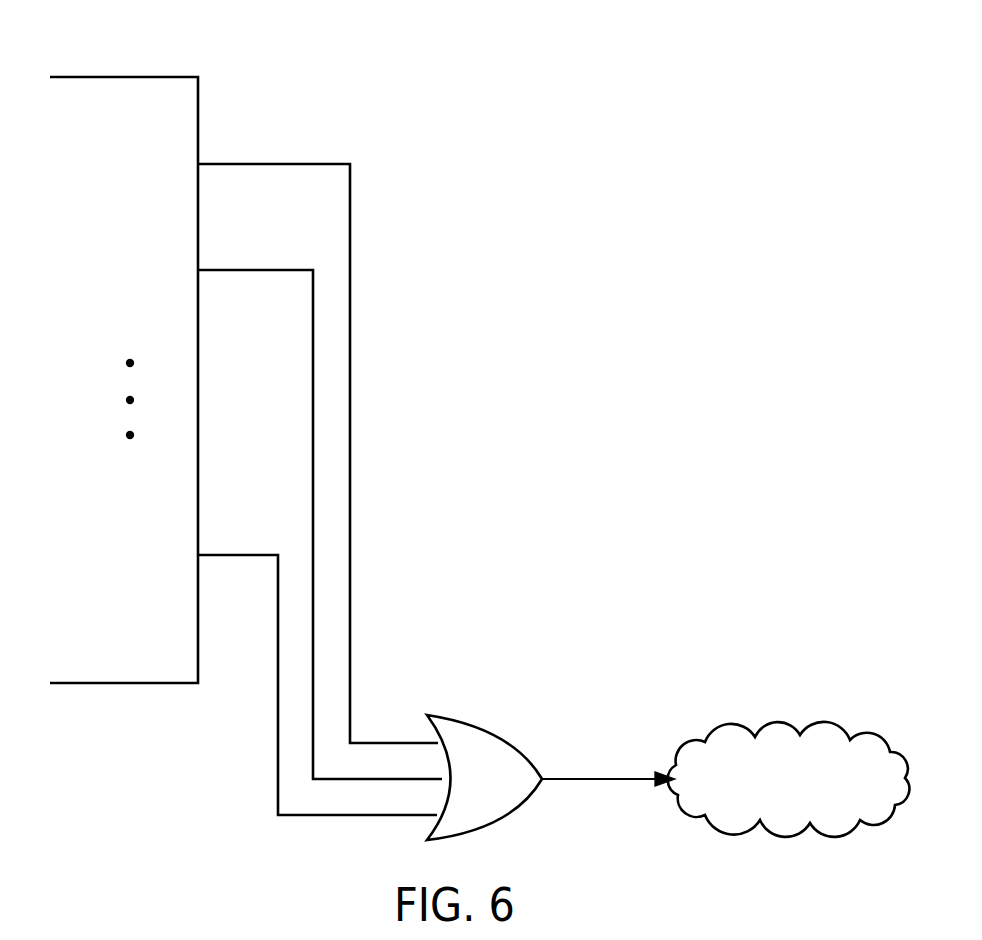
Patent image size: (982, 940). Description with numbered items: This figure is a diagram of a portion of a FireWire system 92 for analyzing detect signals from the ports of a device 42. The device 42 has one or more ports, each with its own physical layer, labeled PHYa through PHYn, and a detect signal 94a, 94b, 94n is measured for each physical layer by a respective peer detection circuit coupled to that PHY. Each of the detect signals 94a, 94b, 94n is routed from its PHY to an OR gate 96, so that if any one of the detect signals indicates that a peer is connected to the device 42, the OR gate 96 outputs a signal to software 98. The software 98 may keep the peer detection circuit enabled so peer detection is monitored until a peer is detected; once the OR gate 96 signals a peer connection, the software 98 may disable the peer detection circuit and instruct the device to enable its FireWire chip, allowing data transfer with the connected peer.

The device 42 is at (76, 130).
The FireWire system 92 is at (476, 72).
The detect signal 94a is at (273, 163).
The detect signal 94b is at (237, 269).
The detect signal 94n is at (222, 553).
The OR gate 96 is at (490, 737).
The software 98 is at (805, 733).